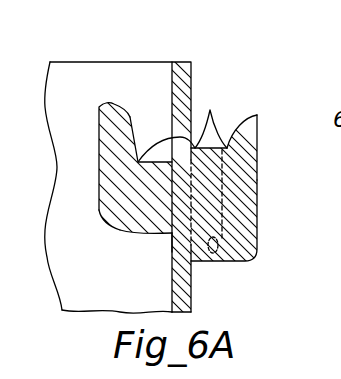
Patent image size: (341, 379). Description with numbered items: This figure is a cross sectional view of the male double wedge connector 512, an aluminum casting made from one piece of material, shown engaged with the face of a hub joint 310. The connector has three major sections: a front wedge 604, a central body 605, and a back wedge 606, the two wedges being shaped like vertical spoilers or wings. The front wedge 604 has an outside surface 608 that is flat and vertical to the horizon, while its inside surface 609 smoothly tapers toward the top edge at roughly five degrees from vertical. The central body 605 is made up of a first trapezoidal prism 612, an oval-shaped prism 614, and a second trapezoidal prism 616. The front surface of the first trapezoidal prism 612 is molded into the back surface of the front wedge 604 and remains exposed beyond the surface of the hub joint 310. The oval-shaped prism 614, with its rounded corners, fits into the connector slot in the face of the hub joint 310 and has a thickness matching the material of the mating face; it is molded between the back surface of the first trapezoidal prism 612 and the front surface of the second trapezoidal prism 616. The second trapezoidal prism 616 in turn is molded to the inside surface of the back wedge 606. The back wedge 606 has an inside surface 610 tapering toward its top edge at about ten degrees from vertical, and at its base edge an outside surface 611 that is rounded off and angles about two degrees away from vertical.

The hub joint 310 is at (182, 62).
The back wedge 606 is at (99, 107).
The inside surface of the back wedge 610 is at (138, 108).
The outside surface of the back wedge 611 is at (110, 220).
The second trapezoidal prism 616 is at (157, 235).
The oval-shaped prism 614 is at (173, 238).
The first trapezoidal prism 612 is at (207, 300).
The central body 605 is at (210, 112).
The front wedge 604 is at (263, 114).
The outside surface of the front wedge 608 is at (260, 172).
The male double wedge connector 512 is at (259, 220).
The inside surface of the front wedge 609 is at (203, 263).